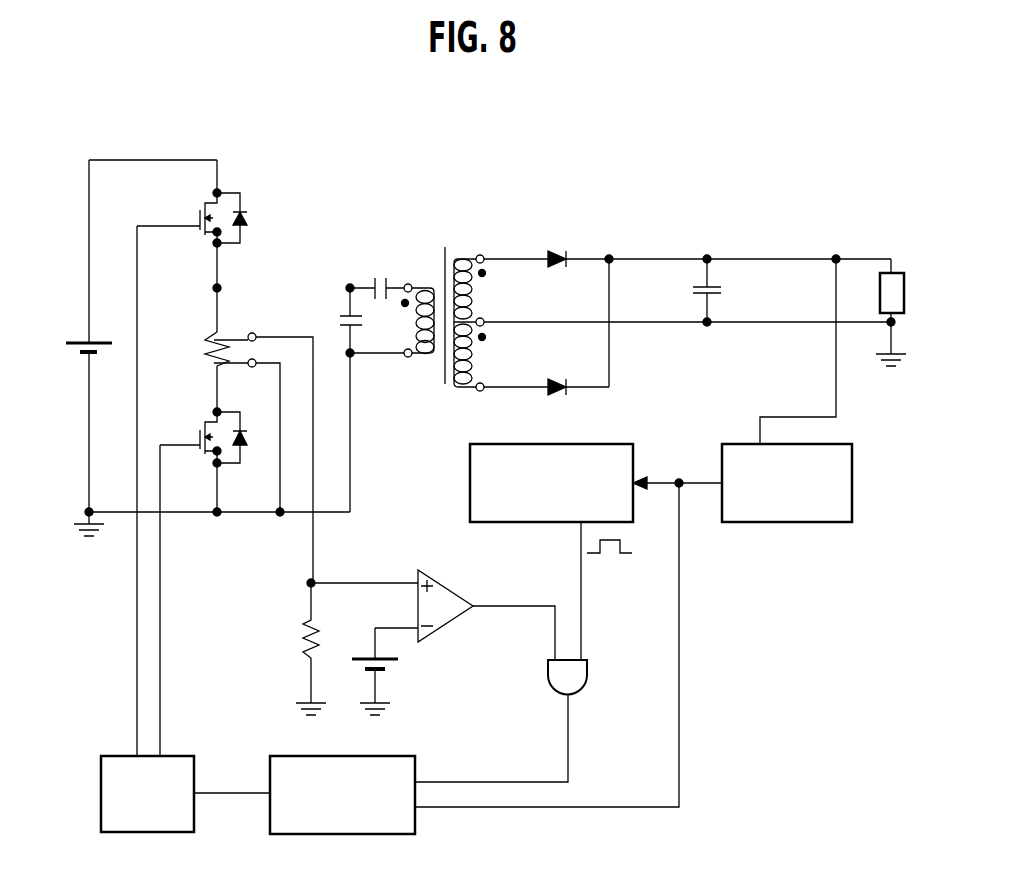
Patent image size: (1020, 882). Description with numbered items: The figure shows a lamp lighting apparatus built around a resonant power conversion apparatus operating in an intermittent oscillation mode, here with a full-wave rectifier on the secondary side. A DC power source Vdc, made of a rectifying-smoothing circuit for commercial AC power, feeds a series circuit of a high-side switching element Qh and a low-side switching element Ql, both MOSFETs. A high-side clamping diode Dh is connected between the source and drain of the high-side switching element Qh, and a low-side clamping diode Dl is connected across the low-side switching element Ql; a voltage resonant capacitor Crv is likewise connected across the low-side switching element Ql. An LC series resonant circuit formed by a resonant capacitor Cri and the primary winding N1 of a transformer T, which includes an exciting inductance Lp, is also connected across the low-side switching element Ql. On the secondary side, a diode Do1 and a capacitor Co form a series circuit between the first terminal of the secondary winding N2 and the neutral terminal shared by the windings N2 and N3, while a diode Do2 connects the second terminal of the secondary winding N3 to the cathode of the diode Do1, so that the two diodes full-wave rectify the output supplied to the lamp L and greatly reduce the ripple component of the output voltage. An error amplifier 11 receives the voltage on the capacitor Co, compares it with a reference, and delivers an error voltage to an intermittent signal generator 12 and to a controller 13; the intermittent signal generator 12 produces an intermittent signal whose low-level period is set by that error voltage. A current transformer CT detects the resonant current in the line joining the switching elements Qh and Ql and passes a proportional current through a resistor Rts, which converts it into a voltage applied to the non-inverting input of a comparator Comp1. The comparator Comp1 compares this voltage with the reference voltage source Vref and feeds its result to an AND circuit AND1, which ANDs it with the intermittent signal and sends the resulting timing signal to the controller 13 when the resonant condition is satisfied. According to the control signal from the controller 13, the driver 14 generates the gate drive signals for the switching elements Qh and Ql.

The error amplifier 11 is at (760, 524).
The intermittent signal generator 12 is at (470, 478).
The controller 13 is at (270, 768).
The driver 14 is at (101, 768).
The high-side switching element Qh is at (179, 225).
The low-side switching element Ql is at (190, 445).
The high-side clamping diode Dh is at (248, 218).
The low-side clamping diode Dl is at (247, 437).
The current transformer CT is at (243, 334).
The resonant capacitor Cri is at (381, 273).
The voltage resonant capacitor Crv is at (357, 400).
The transformer T is at (439, 308).
The primary winding N1 is at (420, 307).
The secondary winding N2 is at (469, 276).
The secondary winding N3 is at (469, 370).
The exciting inductance Lp is at (404, 318).
The diode Do1 is at (546, 245).
The diode Do2 is at (546, 373).
The capacitor Co is at (722, 290).
The lamp L is at (891, 312).
The DC power source Vdc is at (62, 369).
The comparator Comp1 is at (450, 585).
The resistor Rts is at (296, 649).
The reference voltage source Vref is at (393, 671).
The AND circuit AND1 is at (575, 695).